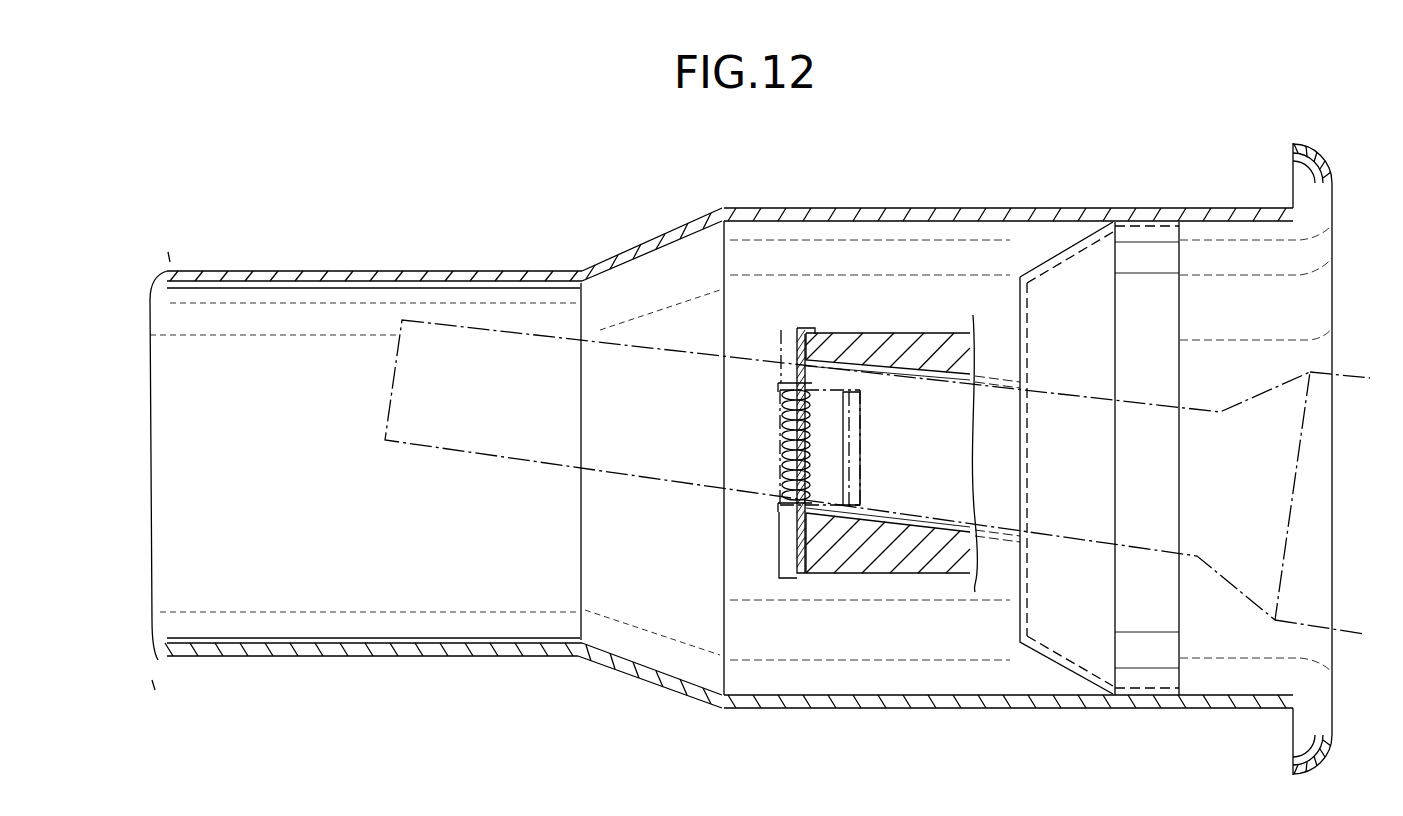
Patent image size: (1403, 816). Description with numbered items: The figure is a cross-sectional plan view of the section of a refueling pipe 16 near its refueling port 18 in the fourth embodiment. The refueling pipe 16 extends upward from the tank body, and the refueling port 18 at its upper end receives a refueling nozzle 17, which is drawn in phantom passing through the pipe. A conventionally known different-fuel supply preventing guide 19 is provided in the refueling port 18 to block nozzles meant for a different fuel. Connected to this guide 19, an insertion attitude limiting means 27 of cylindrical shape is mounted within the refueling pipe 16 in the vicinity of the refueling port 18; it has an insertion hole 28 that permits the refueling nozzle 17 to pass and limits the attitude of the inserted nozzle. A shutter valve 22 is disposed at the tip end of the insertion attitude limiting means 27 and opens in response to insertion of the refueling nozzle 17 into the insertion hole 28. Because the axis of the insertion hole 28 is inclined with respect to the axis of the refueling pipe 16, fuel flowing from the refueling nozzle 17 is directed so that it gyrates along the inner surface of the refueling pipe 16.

The refueling pipe 16 is at (519, 271).
The refueling nozzle 17 is at (548, 468).
The refueling port 18 is at (1281, 318).
The different-fuel supply preventing guide 19 is at (1073, 280).
The shutter valve 22 is at (783, 470).
The insertion attitude limiting means 27 is at (920, 352).
The insertion hole 28 is at (845, 372).